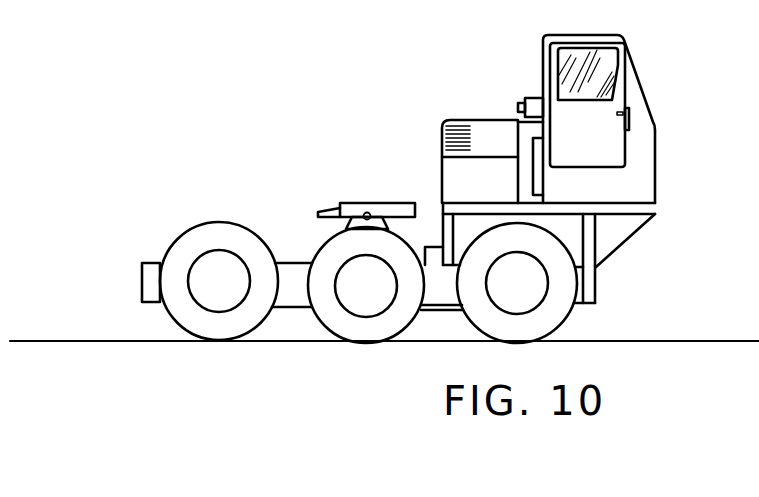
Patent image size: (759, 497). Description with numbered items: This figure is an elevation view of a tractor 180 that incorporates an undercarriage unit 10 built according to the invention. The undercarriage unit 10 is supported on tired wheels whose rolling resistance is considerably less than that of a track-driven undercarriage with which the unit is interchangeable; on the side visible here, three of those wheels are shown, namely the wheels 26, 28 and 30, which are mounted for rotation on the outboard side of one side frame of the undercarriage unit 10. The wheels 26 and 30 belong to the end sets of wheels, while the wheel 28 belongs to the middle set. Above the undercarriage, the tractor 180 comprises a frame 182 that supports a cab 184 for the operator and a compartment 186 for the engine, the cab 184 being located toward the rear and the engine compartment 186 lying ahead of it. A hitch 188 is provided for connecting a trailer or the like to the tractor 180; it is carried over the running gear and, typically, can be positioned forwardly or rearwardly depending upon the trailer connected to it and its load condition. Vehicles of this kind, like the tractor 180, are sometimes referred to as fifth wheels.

The tractor 180 is at (311, 111).
The undercarriage unit 10 is at (142, 280).
The wheel 26 is at (177, 312).
The wheel 28 is at (337, 323).
The wheel 30 is at (548, 318).
The frame 182 is at (622, 230).
The cab 184 is at (632, 85).
The compartment 186 is at (495, 130).
The hitch 188 is at (392, 205).